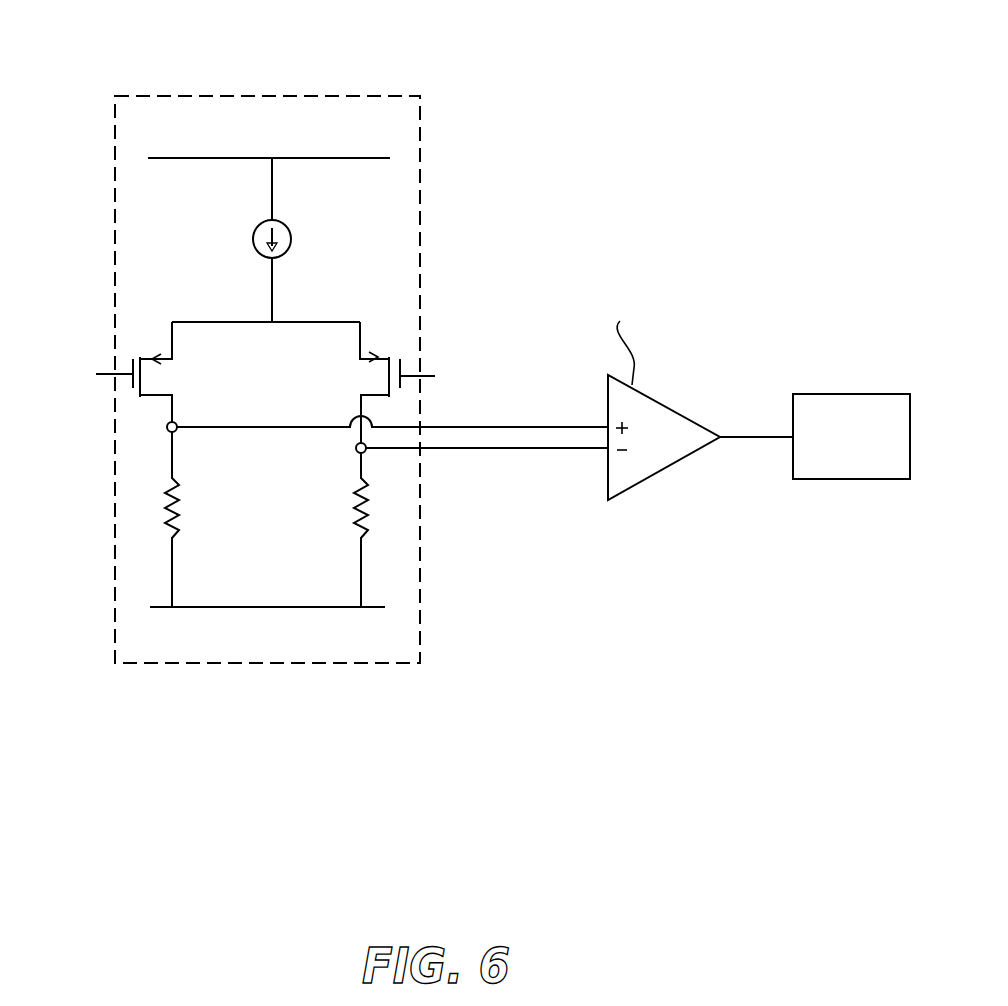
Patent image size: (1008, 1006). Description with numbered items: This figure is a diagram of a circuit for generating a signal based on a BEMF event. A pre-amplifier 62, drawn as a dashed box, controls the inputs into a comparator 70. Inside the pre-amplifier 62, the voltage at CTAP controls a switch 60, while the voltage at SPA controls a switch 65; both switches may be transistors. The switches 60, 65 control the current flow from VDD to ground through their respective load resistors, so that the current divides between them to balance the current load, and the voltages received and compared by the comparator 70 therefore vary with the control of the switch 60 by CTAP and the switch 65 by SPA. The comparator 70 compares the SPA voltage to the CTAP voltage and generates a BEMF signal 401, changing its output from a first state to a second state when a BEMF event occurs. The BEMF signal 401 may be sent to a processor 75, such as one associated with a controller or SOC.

The pre-amplifier 62 is at (357, 93).
The switch 60 is at (148, 319).
The switch 65 is at (402, 322).
The comparator 70 is at (655, 475).
The BEMF signal 401 is at (752, 467).
The processor 75 is at (851, 436).